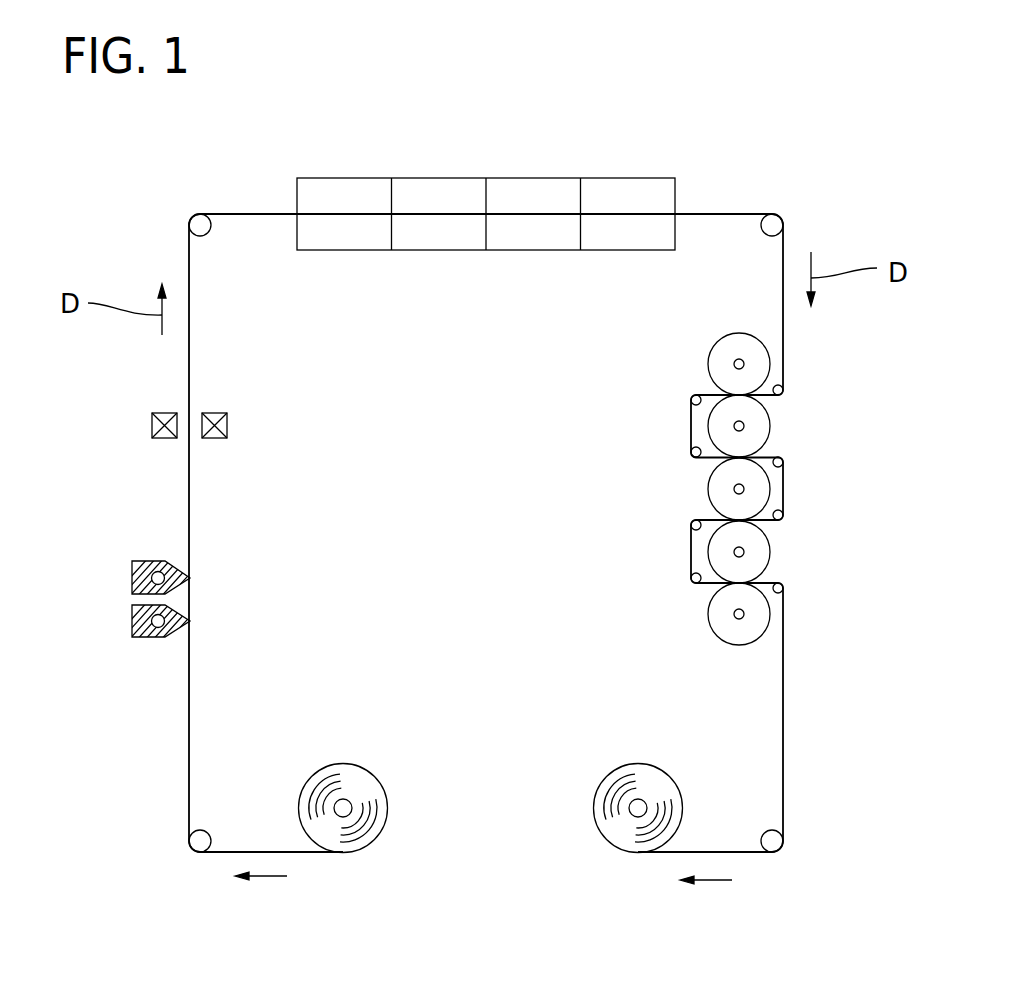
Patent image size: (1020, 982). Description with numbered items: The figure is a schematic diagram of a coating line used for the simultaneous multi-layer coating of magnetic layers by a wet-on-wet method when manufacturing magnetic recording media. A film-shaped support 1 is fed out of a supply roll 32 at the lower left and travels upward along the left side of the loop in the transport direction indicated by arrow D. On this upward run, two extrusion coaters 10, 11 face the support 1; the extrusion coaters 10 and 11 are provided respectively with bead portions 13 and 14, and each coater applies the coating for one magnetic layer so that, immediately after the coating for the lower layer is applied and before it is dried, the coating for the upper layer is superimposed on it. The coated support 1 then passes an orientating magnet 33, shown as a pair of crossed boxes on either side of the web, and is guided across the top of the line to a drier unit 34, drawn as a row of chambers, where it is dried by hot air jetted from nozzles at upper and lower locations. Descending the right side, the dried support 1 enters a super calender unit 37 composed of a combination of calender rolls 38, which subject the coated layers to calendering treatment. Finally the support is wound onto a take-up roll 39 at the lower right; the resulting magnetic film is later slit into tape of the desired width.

The support 1 is at (189, 687).
The extrusion coater 10 is at (122, 666).
The extrusion coater 11 is at (123, 541).
The bead portion 13 is at (158, 628).
The bead portion 14 is at (160, 571).
The supply roll 32 is at (343, 799).
The orientating magnet 33 is at (227, 425).
The drier unit 34 is at (470, 258).
The super calender unit 37 is at (670, 428).
The calender roll 38 is at (708, 363).
The take-up roll 39 is at (638, 799).